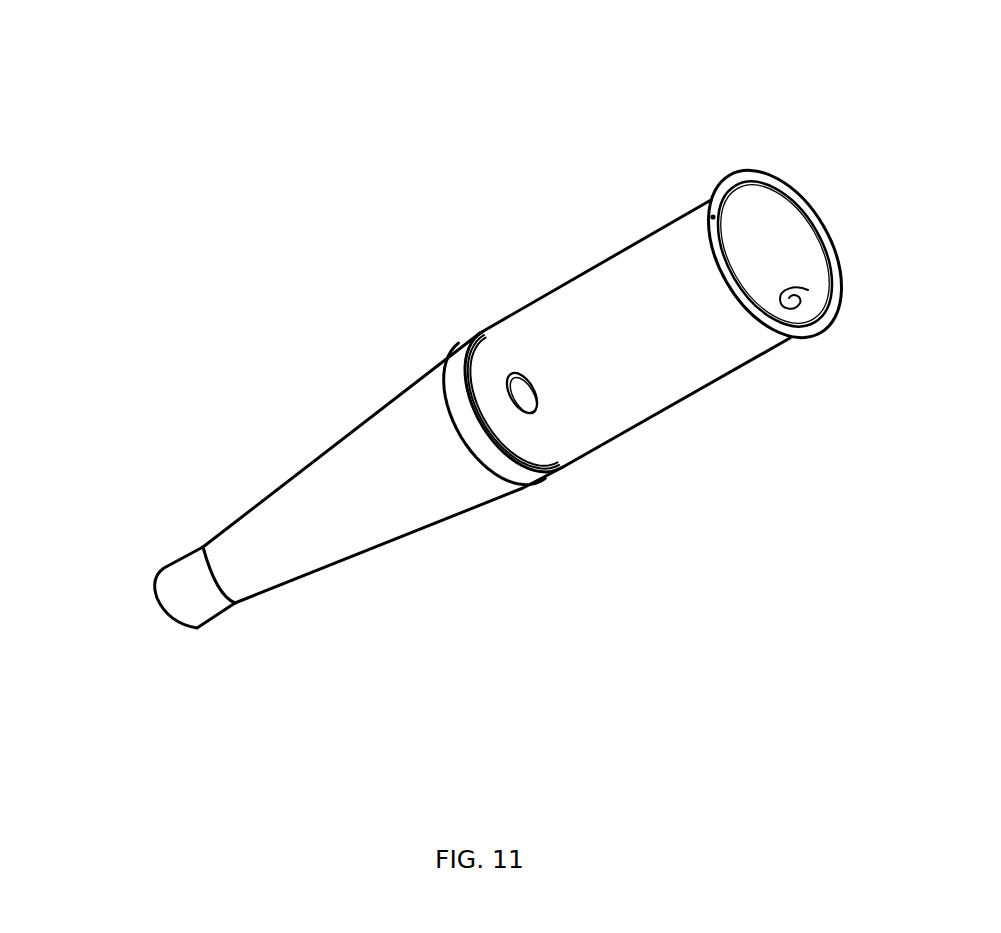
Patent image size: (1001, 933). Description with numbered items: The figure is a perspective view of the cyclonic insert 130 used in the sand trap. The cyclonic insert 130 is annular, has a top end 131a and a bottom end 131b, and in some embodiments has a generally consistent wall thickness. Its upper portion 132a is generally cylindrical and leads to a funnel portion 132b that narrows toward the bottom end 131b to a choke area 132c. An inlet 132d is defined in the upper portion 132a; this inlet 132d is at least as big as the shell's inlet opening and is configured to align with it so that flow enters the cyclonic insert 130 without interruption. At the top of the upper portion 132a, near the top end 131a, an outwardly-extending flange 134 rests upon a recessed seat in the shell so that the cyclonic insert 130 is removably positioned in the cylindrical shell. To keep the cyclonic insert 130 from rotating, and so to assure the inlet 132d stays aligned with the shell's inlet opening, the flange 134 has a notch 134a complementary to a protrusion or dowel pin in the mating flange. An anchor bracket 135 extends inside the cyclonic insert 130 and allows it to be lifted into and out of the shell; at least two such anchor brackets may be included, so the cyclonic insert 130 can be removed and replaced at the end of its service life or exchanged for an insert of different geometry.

The cyclonic insert 130 is at (327, 153).
The top end 131a is at (805, 355).
The bottom end 131b is at (150, 534).
The upper portion 132a is at (643, 283).
The funnel portion 132b is at (275, 572).
The choke area 132c is at (183, 595).
The inlet 132d is at (510, 372).
The outwardly-extending flange 134 is at (732, 292).
The notch 134a is at (713, 217).
The anchor bracket 135 is at (803, 283).